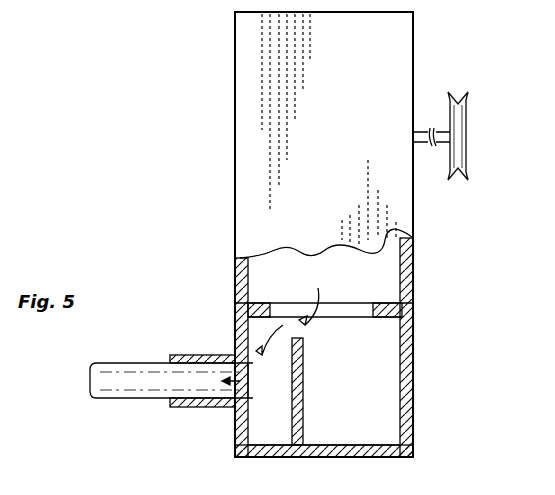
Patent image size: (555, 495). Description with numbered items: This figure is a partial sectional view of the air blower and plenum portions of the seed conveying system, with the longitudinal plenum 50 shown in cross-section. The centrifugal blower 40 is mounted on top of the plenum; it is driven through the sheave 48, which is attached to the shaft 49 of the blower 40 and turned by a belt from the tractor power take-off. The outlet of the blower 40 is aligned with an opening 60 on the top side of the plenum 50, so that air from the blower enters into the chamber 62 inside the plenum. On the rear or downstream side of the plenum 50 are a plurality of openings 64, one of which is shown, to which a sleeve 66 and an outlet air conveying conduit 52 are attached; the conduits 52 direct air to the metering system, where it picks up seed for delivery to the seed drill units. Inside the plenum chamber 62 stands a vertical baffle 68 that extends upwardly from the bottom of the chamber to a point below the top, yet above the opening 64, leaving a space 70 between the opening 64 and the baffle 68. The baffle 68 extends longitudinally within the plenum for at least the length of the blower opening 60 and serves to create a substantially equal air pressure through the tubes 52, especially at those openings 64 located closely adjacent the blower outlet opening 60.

The blower 40 is at (414, 42).
The sheave 48 is at (466, 100).
The shaft 49 is at (420, 148).
The longitudinal plenum 50 is at (414, 342).
The conveying conduit 52 is at (108, 362).
The opening 60 is at (335, 312).
The chamber 62 is at (385, 406).
The opening 64 is at (253, 368).
The sleeve 66 is at (205, 355).
The vertical baffle 68 is at (300, 410).
The space 70 is at (256, 433).